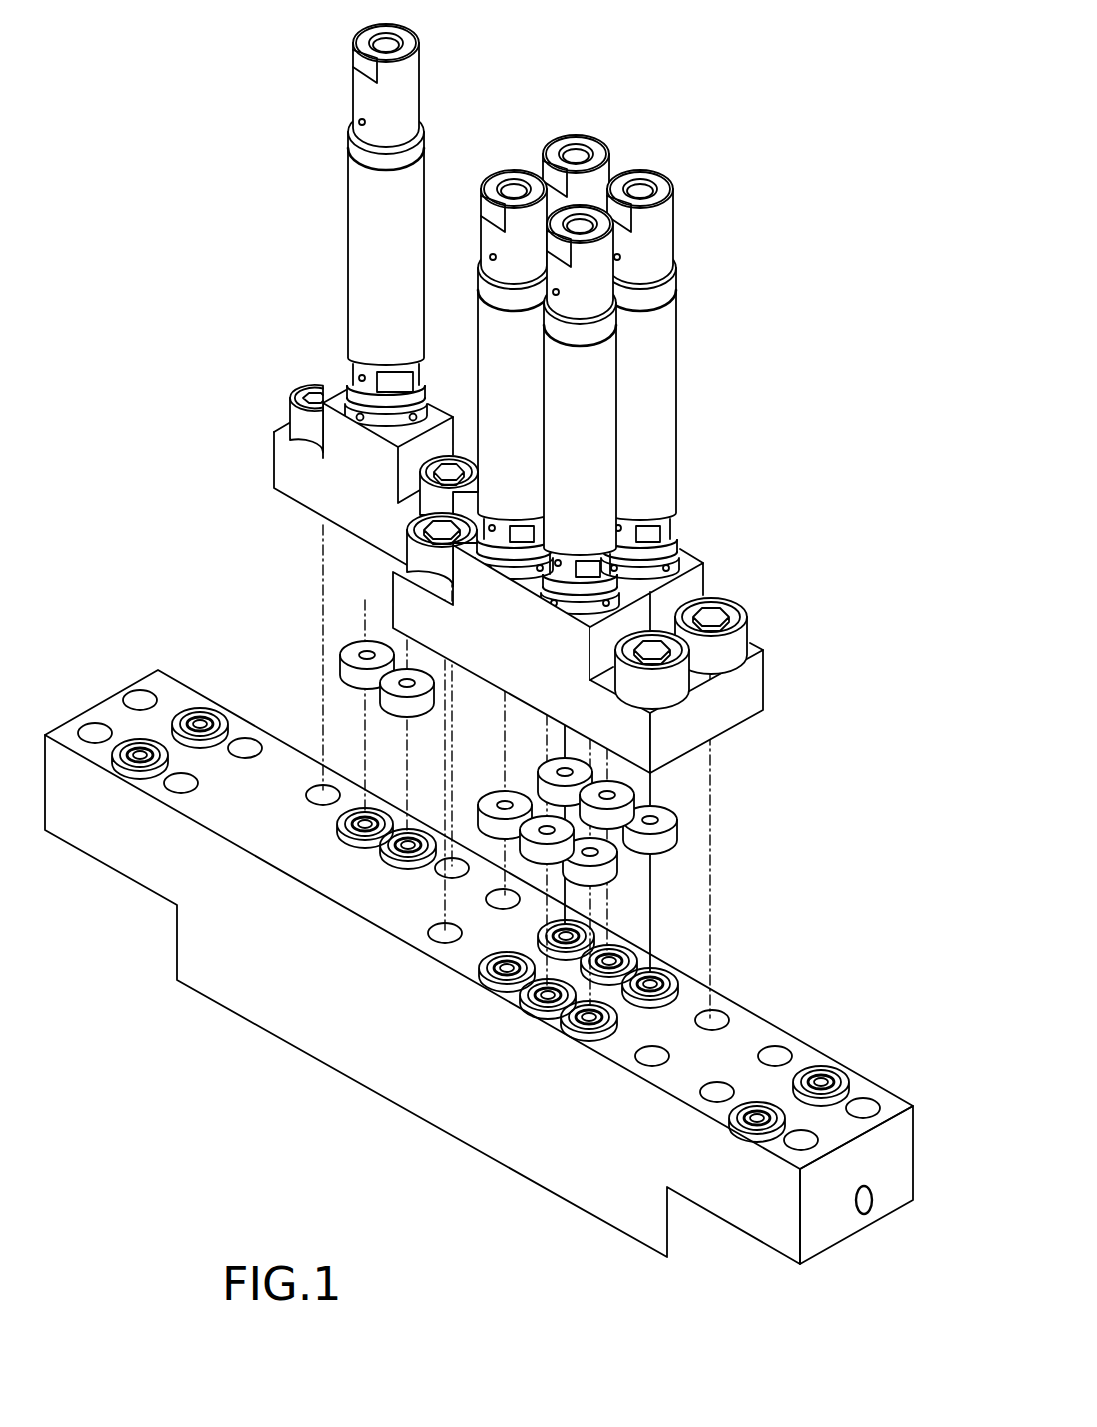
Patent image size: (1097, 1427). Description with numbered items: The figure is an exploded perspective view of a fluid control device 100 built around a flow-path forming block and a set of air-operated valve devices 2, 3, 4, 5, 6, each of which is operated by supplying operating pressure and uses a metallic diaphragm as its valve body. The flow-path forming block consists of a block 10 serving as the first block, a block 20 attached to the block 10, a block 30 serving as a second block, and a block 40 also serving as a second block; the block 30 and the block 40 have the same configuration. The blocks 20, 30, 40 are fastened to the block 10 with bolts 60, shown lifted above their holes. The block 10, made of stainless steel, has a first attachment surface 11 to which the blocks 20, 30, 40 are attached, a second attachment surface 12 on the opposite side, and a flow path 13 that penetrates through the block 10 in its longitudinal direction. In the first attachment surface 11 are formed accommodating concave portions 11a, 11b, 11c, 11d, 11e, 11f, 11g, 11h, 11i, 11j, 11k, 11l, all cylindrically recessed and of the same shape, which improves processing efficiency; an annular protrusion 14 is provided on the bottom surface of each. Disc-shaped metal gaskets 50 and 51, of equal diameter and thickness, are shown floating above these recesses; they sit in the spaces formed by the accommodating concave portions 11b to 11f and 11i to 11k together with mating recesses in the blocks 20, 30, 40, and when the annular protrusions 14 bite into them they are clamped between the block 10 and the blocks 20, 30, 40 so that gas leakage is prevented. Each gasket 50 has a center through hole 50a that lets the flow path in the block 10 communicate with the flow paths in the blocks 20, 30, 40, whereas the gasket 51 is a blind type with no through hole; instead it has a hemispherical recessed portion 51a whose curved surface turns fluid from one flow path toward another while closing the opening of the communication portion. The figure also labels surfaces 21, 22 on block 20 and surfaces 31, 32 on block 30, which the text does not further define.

The fluid control device 100 is at (838, 107).
The valve device 2 is at (380, 233).
The valve device 3 is at (582, 138).
The valve device 4 is at (640, 175).
The valve device 5 is at (514, 175).
The valve device 6 is at (583, 207).
The block 10 is at (506, 967).
The first attachment surface 11 is at (270, 765).
The accommodating concave portion 11a is at (222, 718).
The accommodating concave portion 11b is at (362, 812).
The accommodating concave portion 11c is at (412, 835).
The accommodating concave portion 11d is at (578, 930).
The accommodating concave portion 11e is at (625, 958).
The accommodating concave portion 11f is at (670, 982).
The accommodating concave portion 11g is at (838, 1082).
The accommodating concave portion 11h is at (138, 745).
The accommodating concave portion 11i is at (500, 978).
The accommodating concave portion 11j is at (545, 1013).
The accommodating concave portion 11k is at (585, 1035).
The accommodating concave portion 11l is at (745, 1130).
The second attachment surface 12 is at (290, 1060).
The flow path 13 is at (874, 1200).
The annular protrusion 14 is at (128, 750).
The block 20 is at (323, 294).
The lower surface of first block 21 is at (278, 498).
The upper surface of first block 22 is at (345, 405).
The block 30 is at (630, 632).
The lower surface of second block 31 is at (766, 722).
The upper surface of second block 32 is at (687, 565).
The block 40 is at (690, 730).
The gasket 50 is at (362, 650).
The through hole 50a is at (402, 681).
The gasket 51 is at (566, 771).
The recessed portion 51a is at (545, 828).
The bolt 60 is at (300, 418).